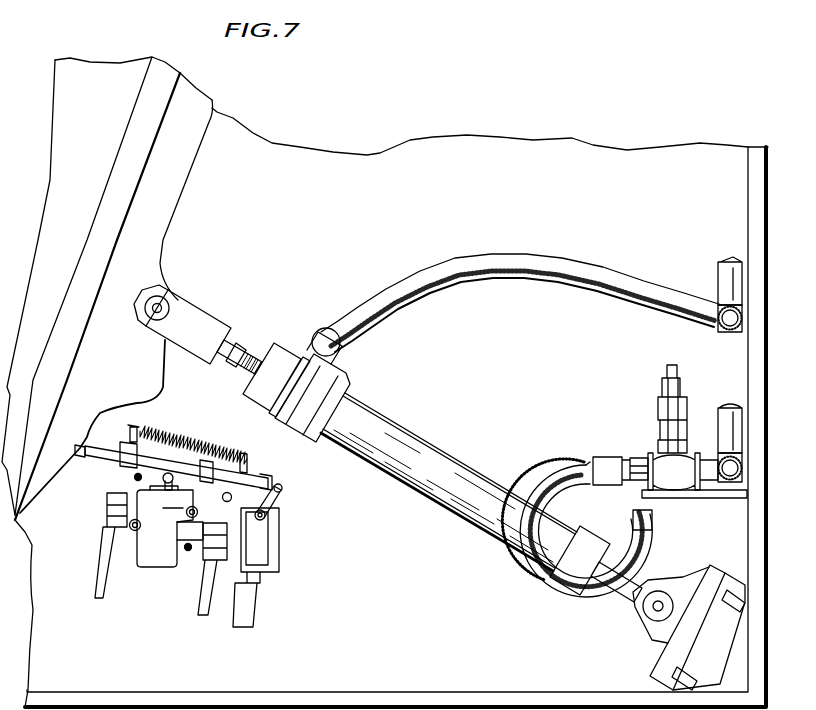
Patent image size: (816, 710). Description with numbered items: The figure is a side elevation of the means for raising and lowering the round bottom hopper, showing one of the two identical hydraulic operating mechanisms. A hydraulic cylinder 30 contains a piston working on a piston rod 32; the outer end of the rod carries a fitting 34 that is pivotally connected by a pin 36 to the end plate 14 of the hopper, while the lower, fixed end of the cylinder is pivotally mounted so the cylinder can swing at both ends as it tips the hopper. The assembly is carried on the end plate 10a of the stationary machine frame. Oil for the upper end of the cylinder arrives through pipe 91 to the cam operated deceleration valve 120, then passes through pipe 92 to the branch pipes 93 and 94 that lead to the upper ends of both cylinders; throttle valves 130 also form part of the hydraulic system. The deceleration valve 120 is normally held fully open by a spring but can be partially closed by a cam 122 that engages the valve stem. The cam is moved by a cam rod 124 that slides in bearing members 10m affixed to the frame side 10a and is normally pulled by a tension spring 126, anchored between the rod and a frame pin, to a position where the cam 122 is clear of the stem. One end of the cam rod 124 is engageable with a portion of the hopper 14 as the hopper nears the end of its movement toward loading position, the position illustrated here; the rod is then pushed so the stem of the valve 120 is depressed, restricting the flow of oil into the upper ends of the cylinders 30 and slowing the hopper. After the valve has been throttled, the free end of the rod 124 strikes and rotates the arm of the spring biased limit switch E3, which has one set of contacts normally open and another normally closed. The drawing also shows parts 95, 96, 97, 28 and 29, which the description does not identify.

The end plate 14 is at (97, 122).
The end plate 10a is at (517, 368).
The bearing members 10m is at (125, 450).
The pin 36 is at (166, 294).
The fitting 34 is at (198, 320).
The piston rod 32 is at (255, 350).
The hydraulic cylinder 30 is at (450, 487).
The branch pipe 93 is at (517, 258).
The pipe 92 is at (723, 287).
The branch pipe 94 is at (727, 332).
The return hose loop 95 is at (548, 577).
The throttle valve 130 is at (663, 462).
The fitting block 97 is at (722, 427).
The port 96 is at (731, 478).
The rod end clevis 28 is at (670, 597).
The mounting plate 29 is at (680, 663).
The cam rod 124 is at (270, 475).
The tension spring 126 is at (170, 433).
The cam 122 is at (160, 479).
The deceleration valve 120 is at (170, 533).
The pipe 91 is at (99, 598).
The limit switch E3 is at (280, 534).